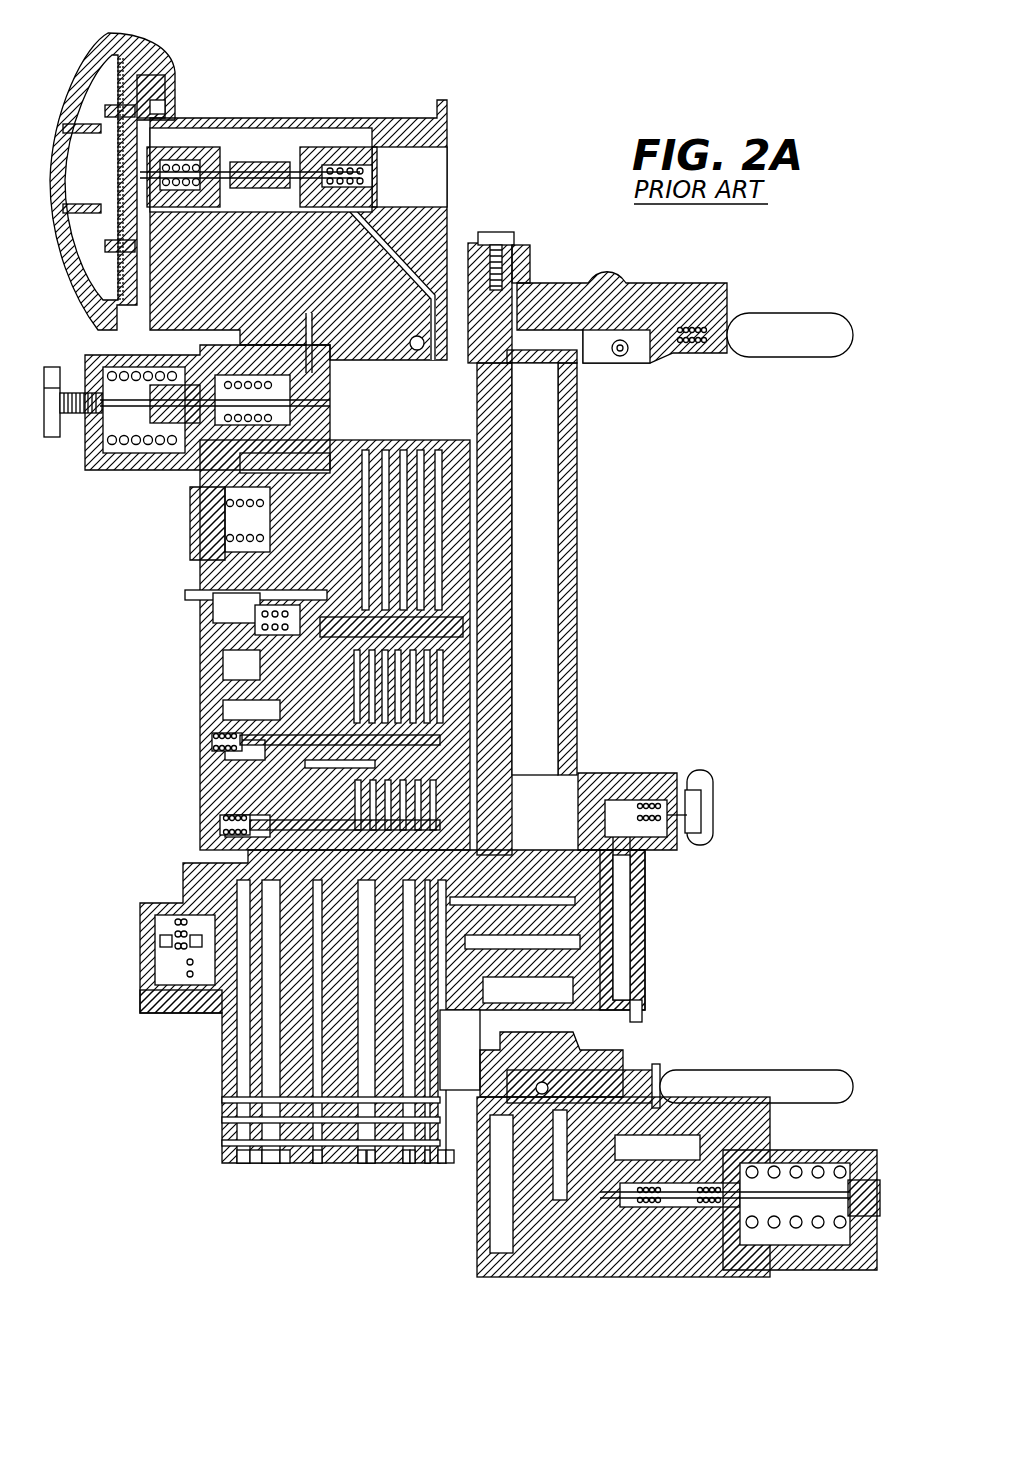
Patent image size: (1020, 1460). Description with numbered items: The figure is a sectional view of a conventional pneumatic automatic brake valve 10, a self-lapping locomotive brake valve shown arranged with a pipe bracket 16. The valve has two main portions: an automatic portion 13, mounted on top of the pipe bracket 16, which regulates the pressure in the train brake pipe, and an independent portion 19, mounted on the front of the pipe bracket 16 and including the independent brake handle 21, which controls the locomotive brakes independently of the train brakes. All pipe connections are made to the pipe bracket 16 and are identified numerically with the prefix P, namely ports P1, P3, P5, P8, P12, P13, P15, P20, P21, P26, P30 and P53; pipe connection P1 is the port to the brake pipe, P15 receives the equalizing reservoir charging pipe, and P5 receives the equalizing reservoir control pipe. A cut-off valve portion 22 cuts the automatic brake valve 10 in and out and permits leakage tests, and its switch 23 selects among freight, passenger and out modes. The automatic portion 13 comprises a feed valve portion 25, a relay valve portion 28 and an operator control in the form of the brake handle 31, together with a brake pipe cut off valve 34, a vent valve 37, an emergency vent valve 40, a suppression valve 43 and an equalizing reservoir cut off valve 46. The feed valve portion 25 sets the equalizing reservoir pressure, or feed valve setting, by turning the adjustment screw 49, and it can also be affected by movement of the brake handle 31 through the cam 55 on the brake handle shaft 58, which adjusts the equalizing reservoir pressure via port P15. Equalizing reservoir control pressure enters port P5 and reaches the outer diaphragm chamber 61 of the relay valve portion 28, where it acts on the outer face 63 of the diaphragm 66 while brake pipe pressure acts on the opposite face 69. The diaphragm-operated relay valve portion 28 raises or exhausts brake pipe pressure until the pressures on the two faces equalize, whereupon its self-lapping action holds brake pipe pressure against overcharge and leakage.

The automatic brake valve 10 is at (394, 56).
The automatic portion 13 is at (686, 636).
The pipe bracket 16 is at (128, 993).
The independent portion 19 is at (803, 1267).
The independent brake handle 21 is at (794, 1062).
The cut-off valve portion 22 is at (724, 917).
The switch 23 is at (706, 837).
The feed valve portion 25 is at (143, 460).
The relay valve portion 28 is at (180, 74).
The brake handle 31 is at (755, 352).
The brake pipe cut off valve 34 is at (193, 527).
The vent valve 37 is at (205, 632).
The emergency vent valve 40 is at (205, 750).
The suppression valve 43 is at (215, 828).
The equalizing reservoir cut off valve 46 is at (167, 993).
The adjustment screw 49 is at (52, 368).
The cam 55 is at (462, 405).
The brake handle shaft 58 is at (530, 572).
The outer diaphragm chamber 61 is at (85, 182).
The outer face 63 is at (108, 90).
The diaphragm 66 is at (117, 190).
The opposite face 69 is at (142, 72).
The pipe connection P1 is at (405, 1167).
The pipe connection P3 is at (252, 1167).
The pipe connection P5 is at (373, 1167).
The pipe connection P8 is at (282, 1167).
The pipe connection P12 is at (275, 1167).
The pipe connection P13 is at (453, 1167).
The pipe connection P15 is at (237, 1167).
The pipe connection P20 is at (442, 1167).
The pipe connection P21 is at (358, 1167).
The pipe connection P26 is at (315, 1167).
The pipe connection P30 is at (427, 1167).
The pipe connection P53 is at (417, 1167).